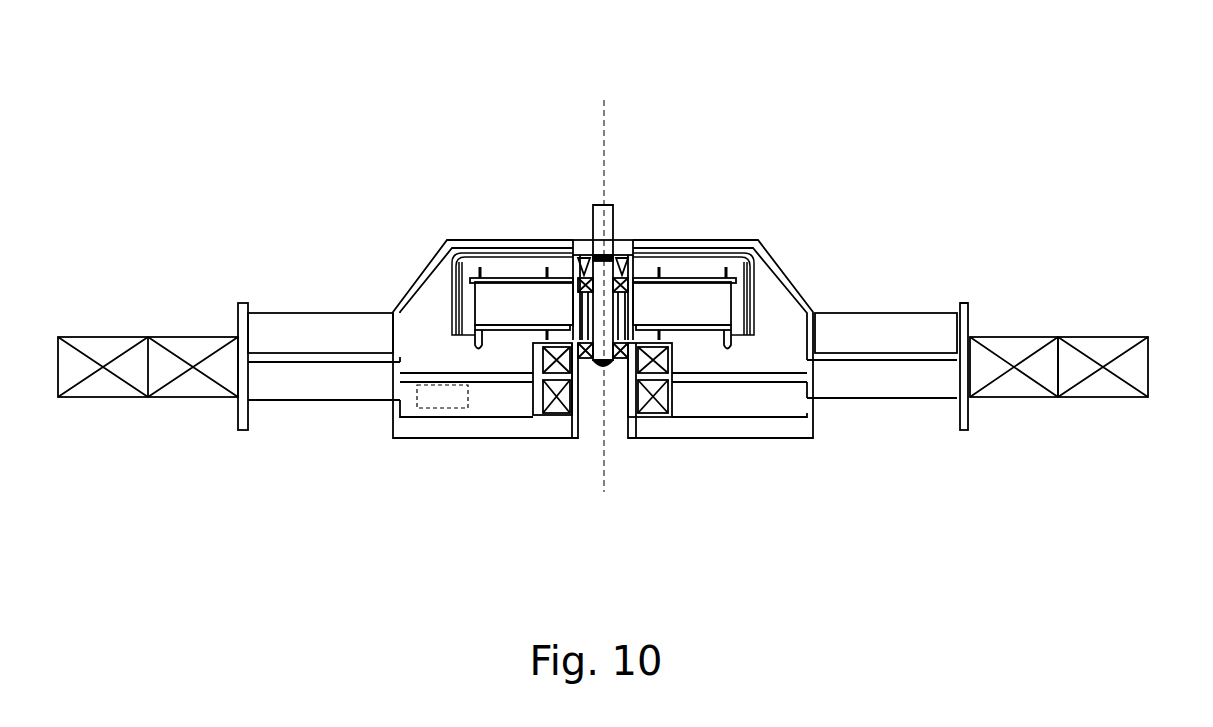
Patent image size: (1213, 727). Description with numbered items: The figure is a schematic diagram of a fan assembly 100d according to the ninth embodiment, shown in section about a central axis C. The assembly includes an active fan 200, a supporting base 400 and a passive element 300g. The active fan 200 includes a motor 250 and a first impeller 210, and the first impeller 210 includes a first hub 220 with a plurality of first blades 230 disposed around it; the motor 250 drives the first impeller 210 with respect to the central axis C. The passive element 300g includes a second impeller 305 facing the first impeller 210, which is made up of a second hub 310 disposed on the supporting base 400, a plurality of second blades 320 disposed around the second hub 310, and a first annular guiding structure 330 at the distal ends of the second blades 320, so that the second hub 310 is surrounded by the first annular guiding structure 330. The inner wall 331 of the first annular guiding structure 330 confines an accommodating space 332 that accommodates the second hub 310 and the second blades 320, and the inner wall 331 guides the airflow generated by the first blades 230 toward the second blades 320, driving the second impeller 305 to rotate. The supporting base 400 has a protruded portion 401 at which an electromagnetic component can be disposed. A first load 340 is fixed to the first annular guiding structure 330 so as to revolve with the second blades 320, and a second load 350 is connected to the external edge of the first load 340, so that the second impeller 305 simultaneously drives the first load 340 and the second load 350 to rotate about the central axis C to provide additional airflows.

The fan assembly 100d is at (1135, 80).
The active fan 200 is at (633, 150).
The motor 250 is at (647, 300).
The first impeller 210 is at (845, 192).
The first hub 220 is at (717, 247).
The first blades 230 is at (842, 322).
The passive element 300g is at (837, 584).
The second impeller 305 is at (965, 541).
The second hub 310 is at (796, 382).
The second blades 320 is at (843, 387).
The first annular guiding structure 330 is at (966, 430).
The inner wall 331 is at (956, 305).
The accommodating space 332 is at (878, 357).
The first load 340 is at (1012, 410).
The second load 350 is at (1105, 400).
The supporting base 400 is at (550, 440).
The protruded portion 401 is at (722, 430).
The central axis C is at (605, 312).